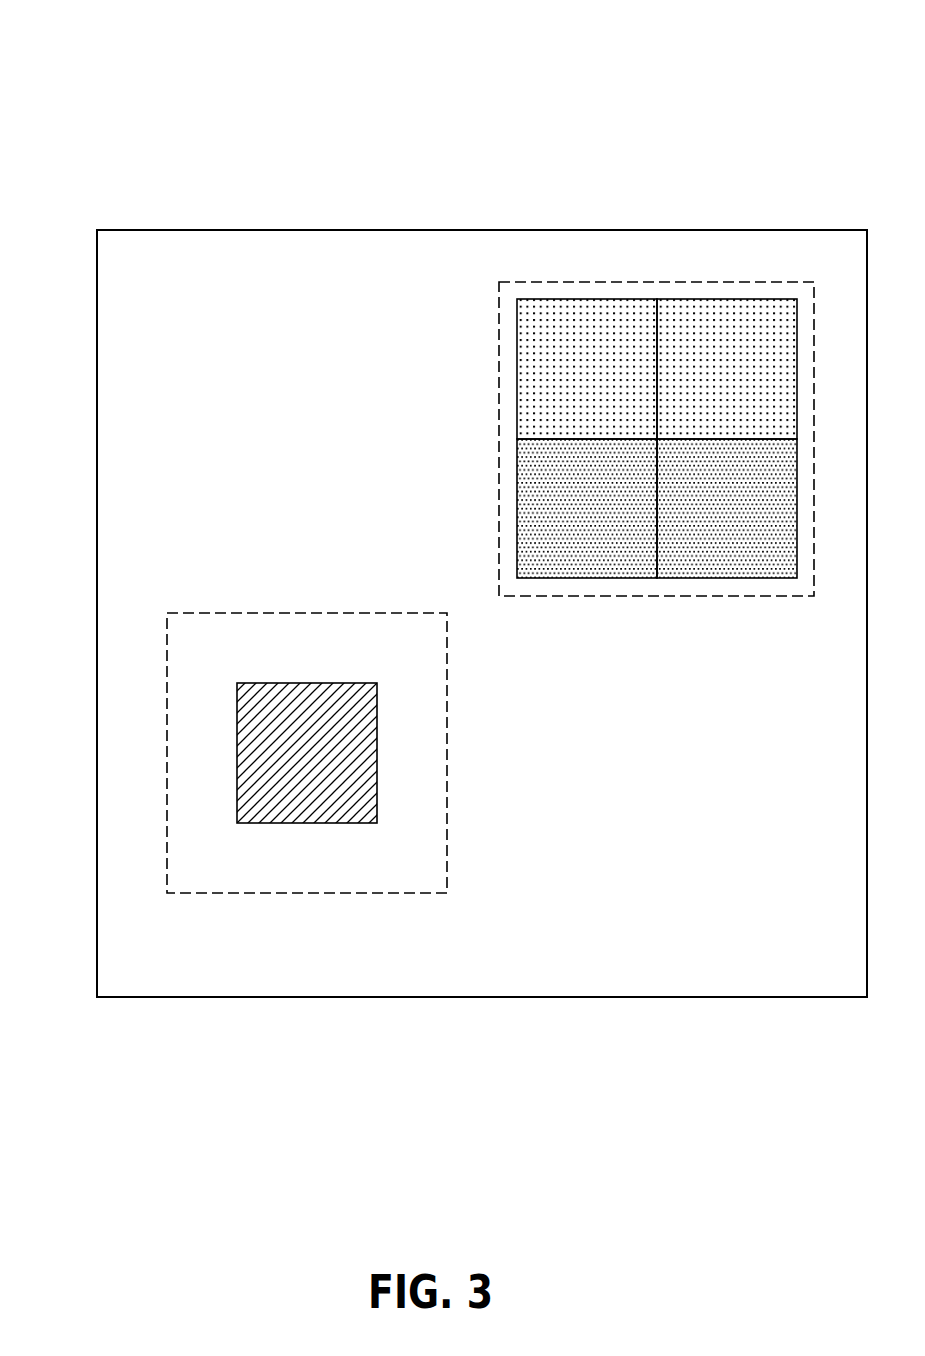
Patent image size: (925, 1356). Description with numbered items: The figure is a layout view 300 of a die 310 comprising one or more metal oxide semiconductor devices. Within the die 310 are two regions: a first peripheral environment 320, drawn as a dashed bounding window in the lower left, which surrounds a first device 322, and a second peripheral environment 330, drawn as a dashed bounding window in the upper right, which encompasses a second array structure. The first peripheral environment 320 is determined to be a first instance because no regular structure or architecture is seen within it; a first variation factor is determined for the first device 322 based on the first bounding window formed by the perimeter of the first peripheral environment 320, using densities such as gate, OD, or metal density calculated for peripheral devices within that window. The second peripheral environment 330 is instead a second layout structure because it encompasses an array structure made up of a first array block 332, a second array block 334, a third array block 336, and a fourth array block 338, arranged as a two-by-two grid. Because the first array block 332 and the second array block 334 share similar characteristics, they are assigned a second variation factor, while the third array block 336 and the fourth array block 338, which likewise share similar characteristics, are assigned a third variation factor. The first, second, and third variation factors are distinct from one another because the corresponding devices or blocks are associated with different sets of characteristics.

The layout view 300 is at (124, 46).
The die 310 is at (445, 230).
The first peripheral environment 320 is at (306, 613).
The first device 322 is at (307, 683).
The second peripheral environment 330 is at (499, 440).
The first array block 332 is at (587, 369).
The second array block 334 is at (727, 369).
The third array block 336 is at (587, 508).
The fourth array block 338 is at (727, 508).